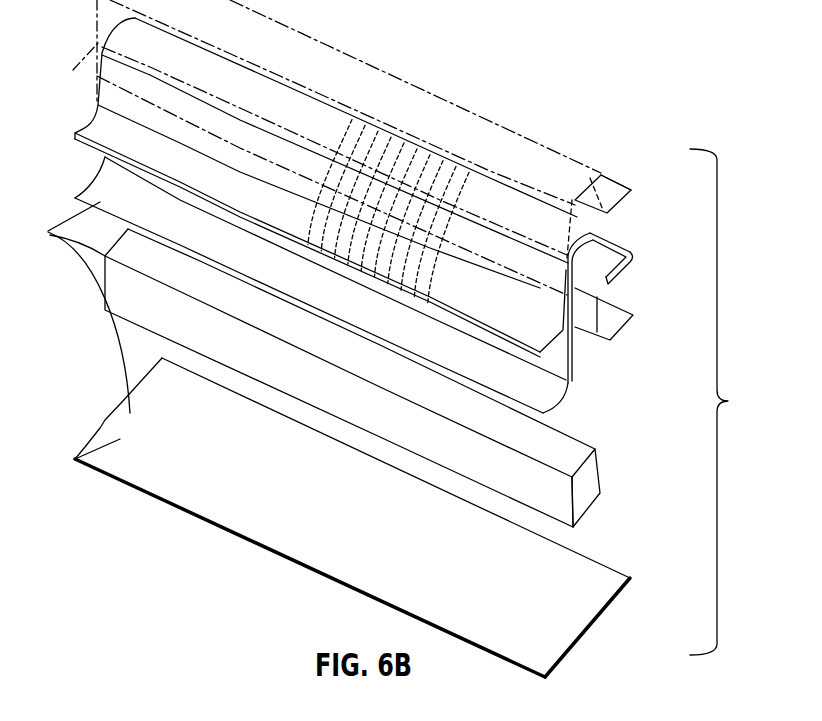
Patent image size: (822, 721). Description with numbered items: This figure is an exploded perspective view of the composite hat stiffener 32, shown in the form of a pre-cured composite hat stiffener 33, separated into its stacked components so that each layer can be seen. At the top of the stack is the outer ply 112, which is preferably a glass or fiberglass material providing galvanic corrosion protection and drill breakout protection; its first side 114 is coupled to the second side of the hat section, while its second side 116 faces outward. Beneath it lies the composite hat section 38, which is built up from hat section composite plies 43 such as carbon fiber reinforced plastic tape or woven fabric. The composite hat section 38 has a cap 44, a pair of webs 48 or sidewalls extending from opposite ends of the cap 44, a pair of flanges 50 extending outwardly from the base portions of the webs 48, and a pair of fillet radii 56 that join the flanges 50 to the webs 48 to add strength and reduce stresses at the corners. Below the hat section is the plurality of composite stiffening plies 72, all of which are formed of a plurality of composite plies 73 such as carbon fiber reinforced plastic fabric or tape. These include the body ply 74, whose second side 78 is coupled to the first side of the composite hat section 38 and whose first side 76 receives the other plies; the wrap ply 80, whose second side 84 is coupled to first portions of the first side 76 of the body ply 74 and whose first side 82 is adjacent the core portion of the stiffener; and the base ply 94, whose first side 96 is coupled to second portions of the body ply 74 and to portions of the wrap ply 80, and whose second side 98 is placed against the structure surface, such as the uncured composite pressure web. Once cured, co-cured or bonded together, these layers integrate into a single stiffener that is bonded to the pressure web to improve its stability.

The composite hat stiffener 32 is at (738, 291).
The pre-cured composite hat stiffener 33 is at (724, 402).
The composite hat section 38 is at (617, 283).
The hat section composite plies 43 is at (371, 140).
The cap 44 is at (612, 226).
The webs 48 is at (633, 251).
The flanges 50 is at (570, 335).
The fillet radii 56 is at (630, 268).
The plurality of composite stiffening plies 72 is at (77, 317).
The plurality of composite plies 73 is at (352, 466).
The body ply 74 is at (630, 332).
The first side 76 is at (592, 344).
The second side 78 is at (548, 406).
The wrap ply 80 is at (603, 478).
The first side 82 is at (583, 500).
The second side 84 is at (583, 444).
The base ply 94 is at (590, 606).
The first side 96 is at (123, 470).
The second side 98 is at (200, 520).
The outer ply 112 is at (612, 202).
The first side 114 is at (590, 205).
The second side 116 is at (483, 128).